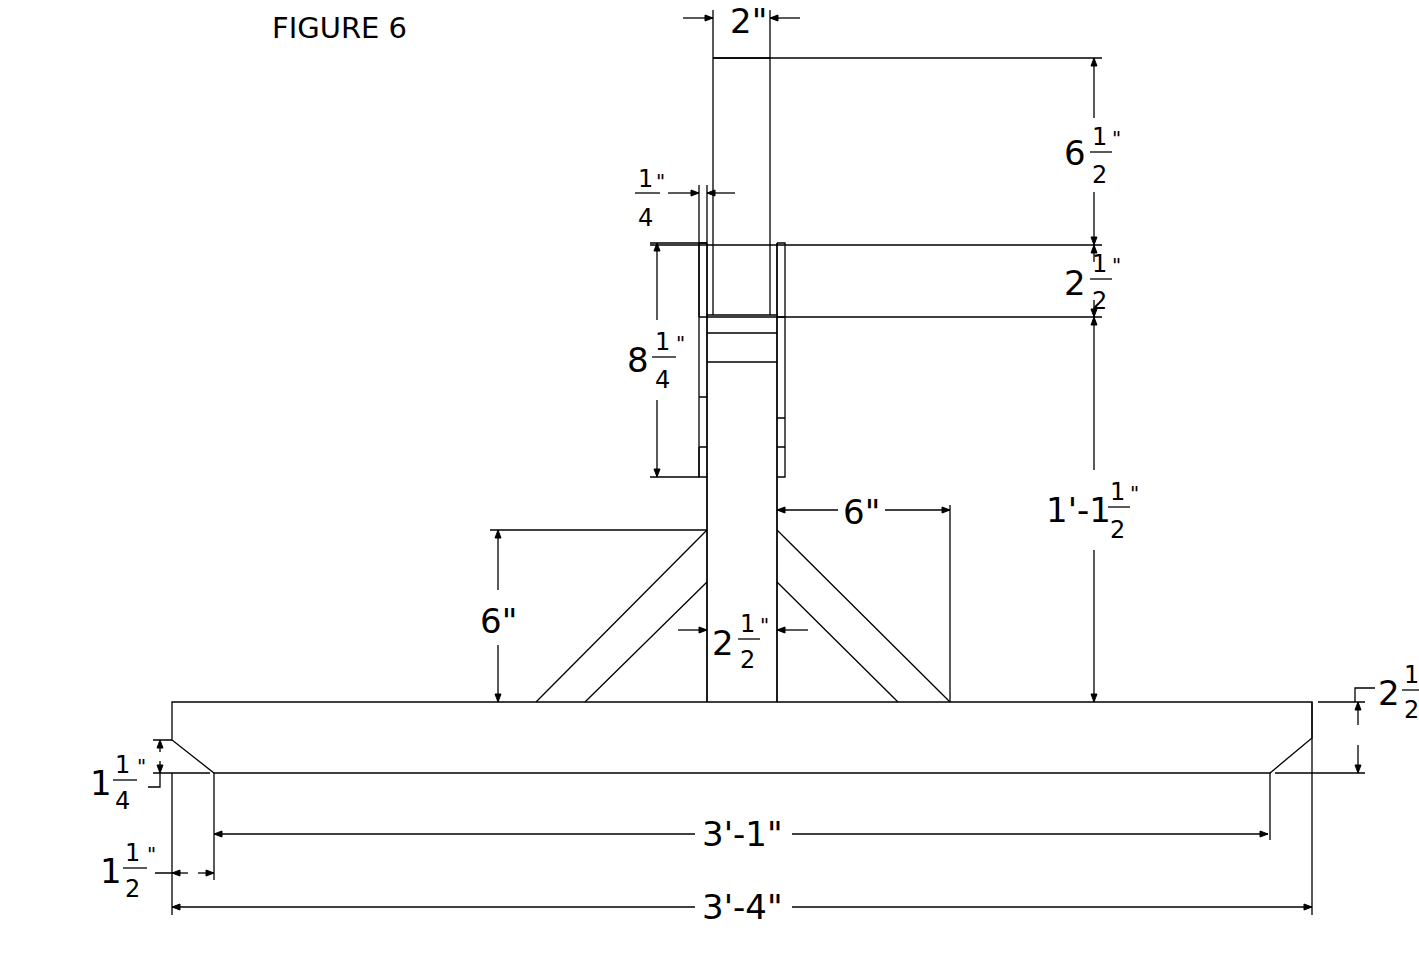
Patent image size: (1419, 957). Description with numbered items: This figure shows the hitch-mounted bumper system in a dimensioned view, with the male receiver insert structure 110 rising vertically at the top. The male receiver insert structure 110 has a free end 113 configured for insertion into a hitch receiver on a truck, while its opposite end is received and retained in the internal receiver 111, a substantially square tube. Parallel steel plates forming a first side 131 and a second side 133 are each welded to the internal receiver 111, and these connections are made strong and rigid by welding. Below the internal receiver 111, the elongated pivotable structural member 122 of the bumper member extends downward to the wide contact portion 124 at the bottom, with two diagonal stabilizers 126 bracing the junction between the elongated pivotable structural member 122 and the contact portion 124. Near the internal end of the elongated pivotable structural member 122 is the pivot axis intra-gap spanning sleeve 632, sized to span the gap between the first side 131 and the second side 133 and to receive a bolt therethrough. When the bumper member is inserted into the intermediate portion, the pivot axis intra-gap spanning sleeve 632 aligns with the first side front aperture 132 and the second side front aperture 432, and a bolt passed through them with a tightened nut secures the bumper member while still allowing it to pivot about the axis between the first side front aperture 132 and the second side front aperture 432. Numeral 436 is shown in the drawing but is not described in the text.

The male receiver insert structure 110 is at (750, 112).
The internal receiver 111 is at (773, 243).
The free end 113 is at (740, 55).
The elongated pivotable structural member 122 is at (738, 405).
The contact portion 124 is at (863, 747).
The diagonal stabilizers 126 is at (843, 632).
The first side 131 is at (785, 411).
The first side front aperture 132 is at (800, 340).
The second side 133 is at (700, 399).
The second side front aperture 432 is at (690, 332).
The lower sleeve section 436 is at (687, 453).
The pivot axis intra-gap spanning sleeve 632 is at (738, 347).